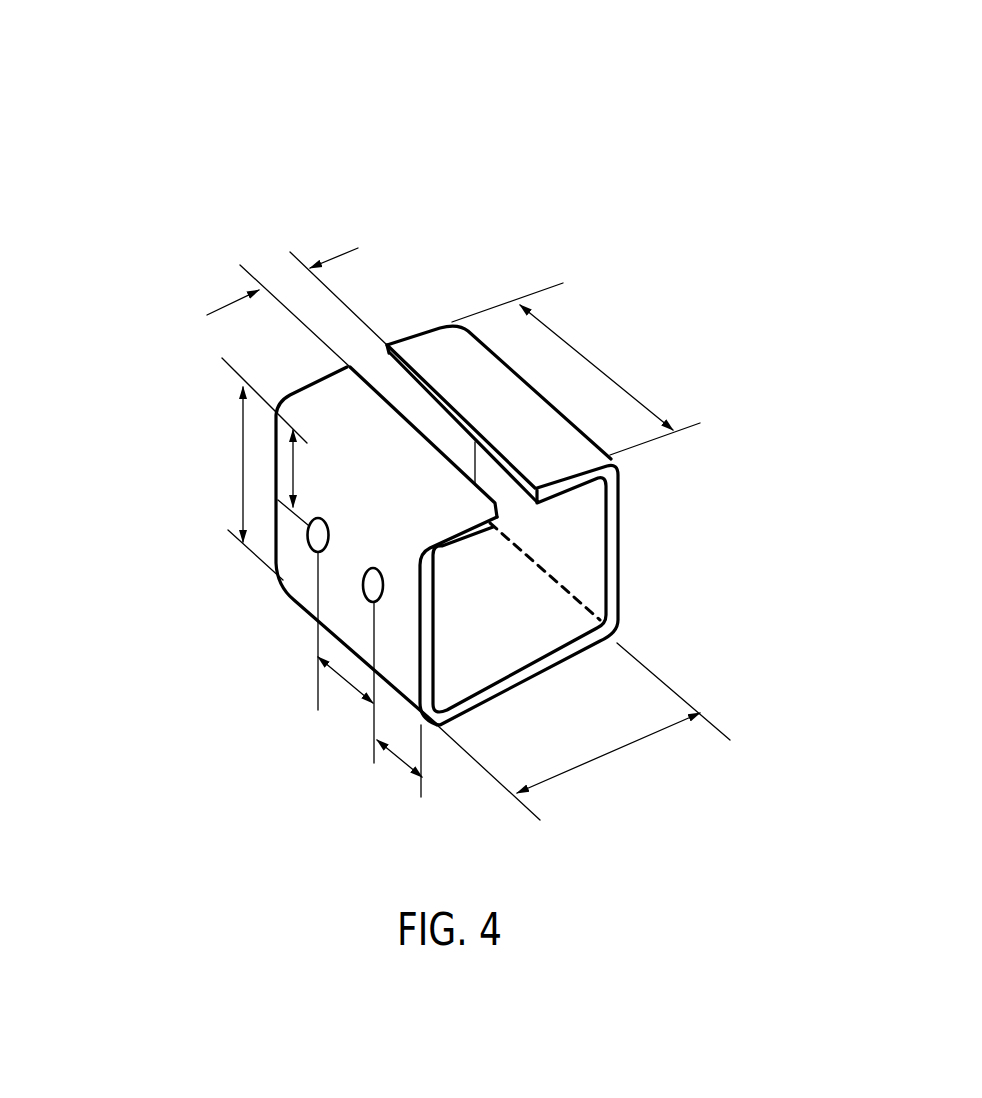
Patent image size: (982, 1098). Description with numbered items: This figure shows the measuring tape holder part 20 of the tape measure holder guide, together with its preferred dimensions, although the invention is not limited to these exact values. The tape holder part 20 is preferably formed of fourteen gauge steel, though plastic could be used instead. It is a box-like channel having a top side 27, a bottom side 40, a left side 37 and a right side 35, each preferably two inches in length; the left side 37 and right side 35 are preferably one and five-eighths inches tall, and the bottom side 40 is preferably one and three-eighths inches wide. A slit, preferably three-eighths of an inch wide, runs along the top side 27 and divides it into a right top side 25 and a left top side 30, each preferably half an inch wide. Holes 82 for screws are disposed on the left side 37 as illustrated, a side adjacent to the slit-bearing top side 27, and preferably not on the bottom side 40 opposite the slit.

The measuring tape holder part 20 is at (492, 222).
The right top side 25 is at (476, 363).
The top side 27 is at (393, 198).
The left top side 30 is at (348, 396).
The right side 35 is at (572, 537).
The left side 37 is at (293, 580).
The bottom side 40 is at (522, 627).
The holes 82 is at (308, 540).